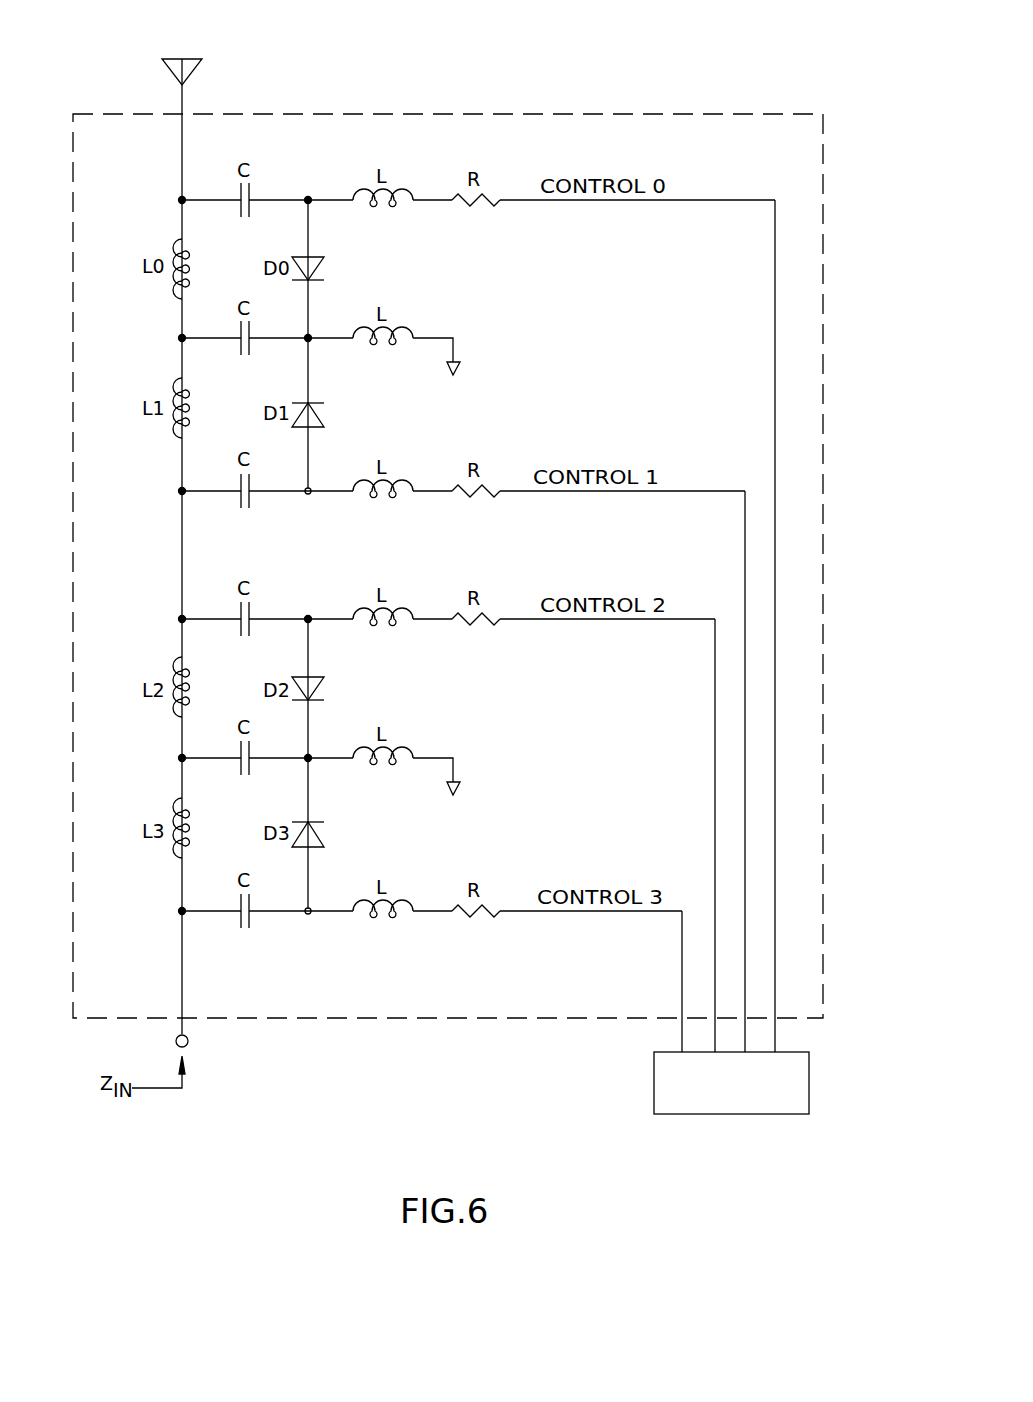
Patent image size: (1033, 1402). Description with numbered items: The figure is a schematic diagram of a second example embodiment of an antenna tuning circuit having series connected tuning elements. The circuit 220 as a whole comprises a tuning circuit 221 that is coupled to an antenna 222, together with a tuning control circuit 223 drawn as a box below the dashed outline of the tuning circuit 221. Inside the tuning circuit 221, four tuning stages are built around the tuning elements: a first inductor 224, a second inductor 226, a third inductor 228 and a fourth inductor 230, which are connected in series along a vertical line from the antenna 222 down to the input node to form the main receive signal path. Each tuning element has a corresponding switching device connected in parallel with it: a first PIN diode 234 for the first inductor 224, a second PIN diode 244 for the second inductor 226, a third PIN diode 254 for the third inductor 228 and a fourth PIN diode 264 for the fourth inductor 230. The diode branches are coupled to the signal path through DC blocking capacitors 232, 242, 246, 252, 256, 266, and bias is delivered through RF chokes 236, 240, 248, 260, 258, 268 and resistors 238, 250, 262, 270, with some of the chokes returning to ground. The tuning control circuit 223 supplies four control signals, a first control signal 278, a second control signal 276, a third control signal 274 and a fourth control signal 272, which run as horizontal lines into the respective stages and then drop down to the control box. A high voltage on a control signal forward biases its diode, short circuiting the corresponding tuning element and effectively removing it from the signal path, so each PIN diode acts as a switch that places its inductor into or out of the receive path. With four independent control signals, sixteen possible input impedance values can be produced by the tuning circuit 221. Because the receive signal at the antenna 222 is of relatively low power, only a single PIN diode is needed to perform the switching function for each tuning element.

The circuit 220 is at (276, 1097).
The tuning circuit 221 is at (357, 1018).
The antenna 222 is at (193, 72).
The tuning control circuit 223 is at (809, 1081).
The inductor L0 224 is at (172, 281).
The inductor L1 226 is at (172, 420).
The inductor L2 228 is at (172, 697).
The inductor L3 230 is at (172, 840).
The DC blocking capacitor C 232 is at (250, 190).
The PIN diode D0 234 is at (323, 259).
The RF choke L 236 is at (403, 186).
The resistor R 238 is at (492, 204).
The RF choke L 240 is at (403, 325).
The DC blocking capacitor C 242 is at (242, 350).
The PIN diode D1 244 is at (325, 415).
The DC blocking capacitor C 246 is at (249, 500).
The inductor L 248 is at (386, 496).
The resistor R 250 is at (472, 497).
The DC blocking capacitor C 252 is at (250, 610).
The PIN diode D2 254 is at (323, 679).
The DC blocking capacitor C 256 is at (242, 770).
The RF choke L 258 is at (403, 745).
The RF choke L 260 is at (403, 605).
The resistor R 262 is at (492, 622).
The PIN diode D3 264 is at (325, 835).
The DC blocking capacitor C 266 is at (249, 920).
The RF choke L 268 is at (386, 916).
The resistor R 270 is at (472, 917).
The Control3 272 is at (682, 950).
The Control2 274 is at (715, 710).
The Control1 276 is at (745, 535).
The Control0 278 is at (775, 352).